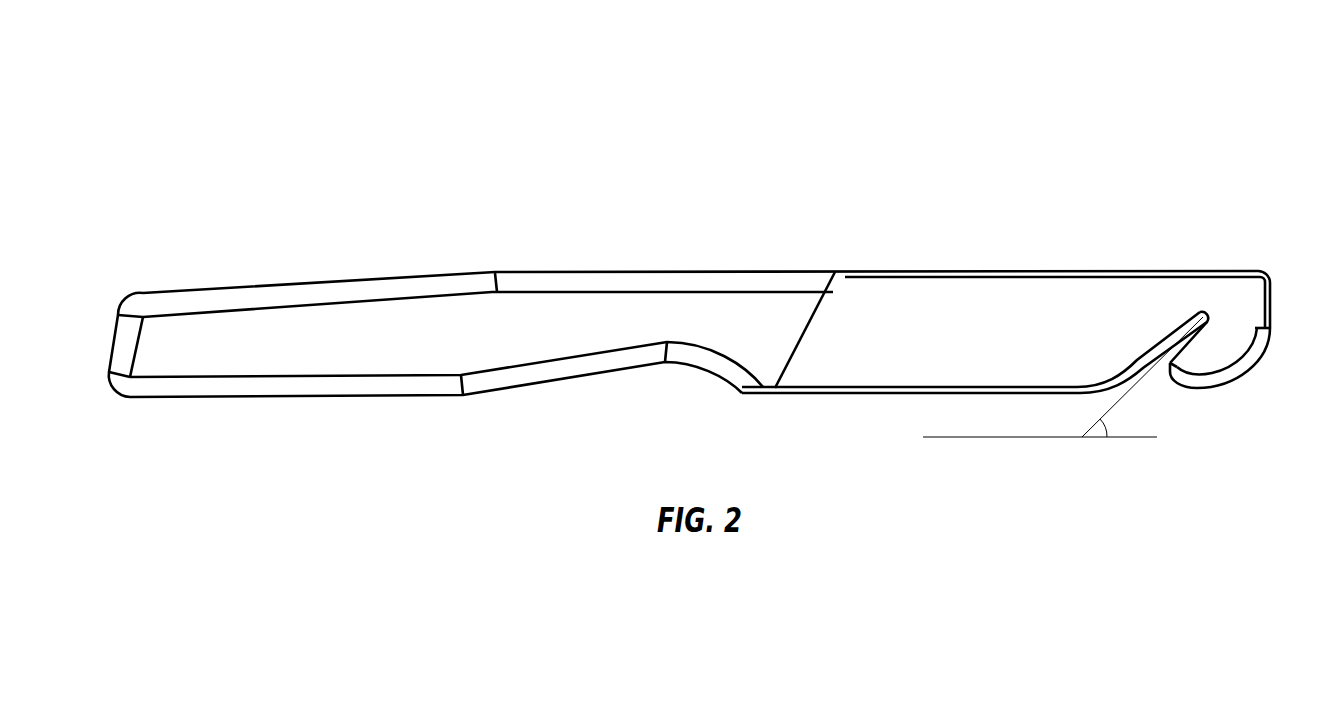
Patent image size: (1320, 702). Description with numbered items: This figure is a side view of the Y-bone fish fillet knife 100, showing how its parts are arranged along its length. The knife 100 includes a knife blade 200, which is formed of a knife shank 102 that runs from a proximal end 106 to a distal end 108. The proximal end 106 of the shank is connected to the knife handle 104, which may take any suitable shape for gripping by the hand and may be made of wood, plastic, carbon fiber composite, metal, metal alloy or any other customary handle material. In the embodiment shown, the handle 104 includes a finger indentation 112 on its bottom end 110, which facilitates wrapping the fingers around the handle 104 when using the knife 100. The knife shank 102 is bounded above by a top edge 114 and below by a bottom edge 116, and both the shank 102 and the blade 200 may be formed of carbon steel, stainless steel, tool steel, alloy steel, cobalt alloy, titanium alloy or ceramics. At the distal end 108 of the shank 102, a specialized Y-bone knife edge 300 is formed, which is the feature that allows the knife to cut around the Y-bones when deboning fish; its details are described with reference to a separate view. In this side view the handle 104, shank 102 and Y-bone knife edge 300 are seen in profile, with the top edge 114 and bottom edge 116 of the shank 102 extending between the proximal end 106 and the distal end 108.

The Y-bone fish fillet knife 100 is at (697, 202).
The knife shank 102 is at (1016, 346).
The knife blade 200 is at (1020, 359).
The knife handle 104 is at (475, 344).
The proximal end 106 is at (112, 332).
The distal end 108 is at (1273, 292).
The bottom end 110 is at (455, 398).
The finger indentation 112 is at (676, 364).
The top edge 114 is at (960, 268).
The bottom edge 116 is at (847, 393).
The Y-bone knife edge 300 is at (1222, 404).